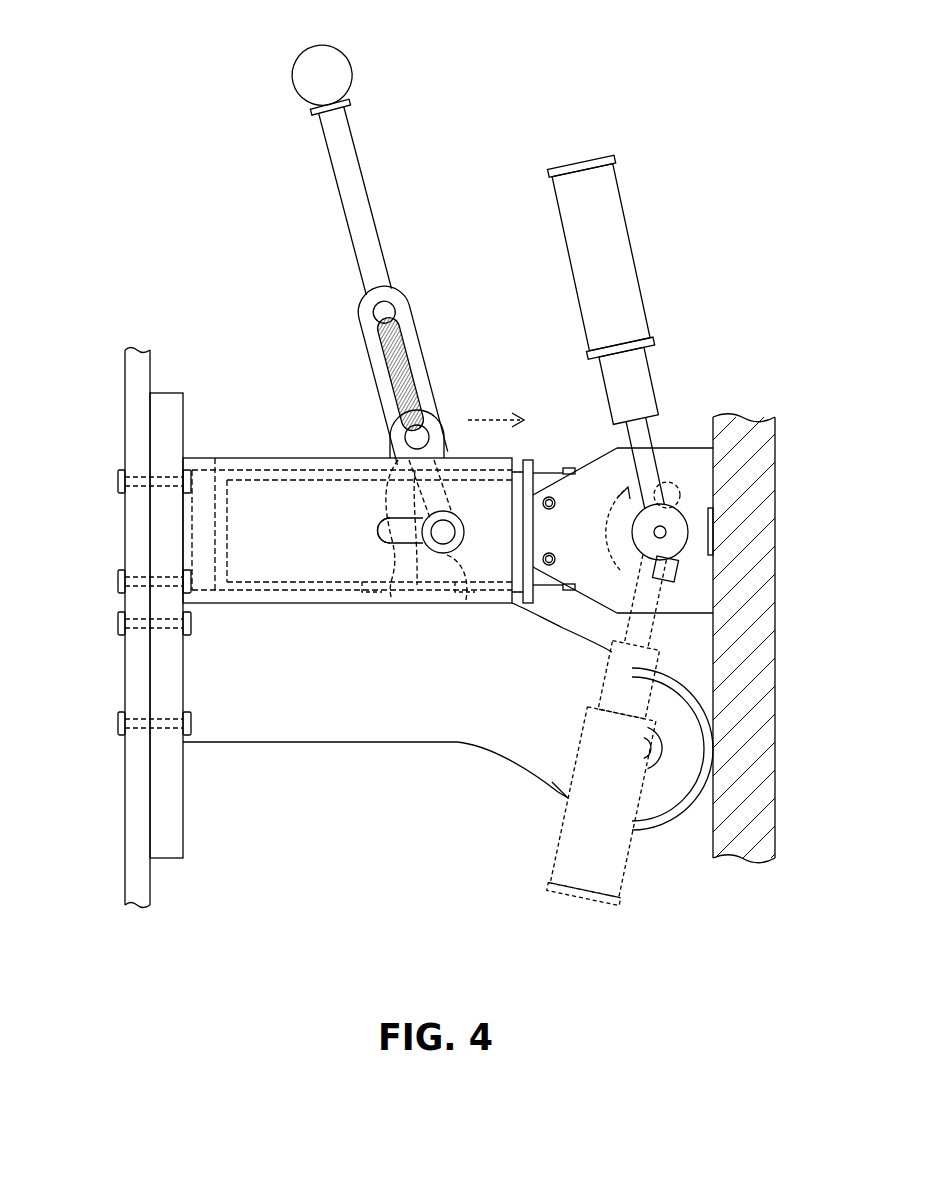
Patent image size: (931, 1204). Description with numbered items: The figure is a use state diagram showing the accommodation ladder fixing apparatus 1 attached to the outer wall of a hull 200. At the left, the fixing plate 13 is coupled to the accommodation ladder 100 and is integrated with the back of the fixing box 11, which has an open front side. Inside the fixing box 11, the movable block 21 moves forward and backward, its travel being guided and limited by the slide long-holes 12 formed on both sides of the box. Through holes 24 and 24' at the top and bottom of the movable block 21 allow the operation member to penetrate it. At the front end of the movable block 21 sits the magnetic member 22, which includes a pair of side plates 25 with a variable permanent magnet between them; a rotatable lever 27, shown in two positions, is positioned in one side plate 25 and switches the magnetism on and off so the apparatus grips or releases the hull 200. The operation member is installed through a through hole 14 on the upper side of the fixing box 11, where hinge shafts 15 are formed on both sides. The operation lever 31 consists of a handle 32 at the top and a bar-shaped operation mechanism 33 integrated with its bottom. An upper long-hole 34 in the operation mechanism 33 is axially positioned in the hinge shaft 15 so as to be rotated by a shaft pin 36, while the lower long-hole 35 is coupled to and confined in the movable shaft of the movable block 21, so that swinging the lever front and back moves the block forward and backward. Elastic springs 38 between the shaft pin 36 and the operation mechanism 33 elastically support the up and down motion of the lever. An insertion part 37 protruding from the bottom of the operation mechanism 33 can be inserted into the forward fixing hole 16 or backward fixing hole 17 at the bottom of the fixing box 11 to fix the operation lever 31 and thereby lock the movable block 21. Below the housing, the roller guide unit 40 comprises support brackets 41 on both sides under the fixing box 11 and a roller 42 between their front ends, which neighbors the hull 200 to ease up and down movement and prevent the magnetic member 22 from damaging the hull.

The accommodation ladder fixing apparatus 1 is at (222, 145).
The accommodation ladder 100 is at (140, 362).
The fixing plate 13 is at (163, 400).
The fixing box 11 is at (215, 460).
The movable block 21 is at (262, 470).
The slide long-hole 12 is at (400, 536).
The through hole 24 is at (366, 519).
The through hole 24' is at (353, 544).
The lower long-hole 35 is at (457, 558).
The insertion part 37 is at (455, 593).
The upper long-hole 34 is at (392, 437).
The shaft pin 36 is at (430, 428).
The operation lever 31 is at (411, 242).
The handle 32 is at (373, 254).
The operation mechanism 33 is at (395, 300).
The elastic spring 38 is at (410, 343).
The hinge shaft 15 is at (440, 412).
The backward fixing hole 17 is at (372, 602).
The forward fixing hole 16 is at (463, 593).
The through hole 14 is at (473, 455).
The side plate 25 is at (688, 455).
The magnetic member 22 is at (661, 530).
The rotatable lever 27 is at (610, 237).
The roller guide unit 40 is at (574, 748).
The support bracket 41 is at (450, 720).
The roller 42 is at (560, 800).
The hull 200 is at (743, 820).